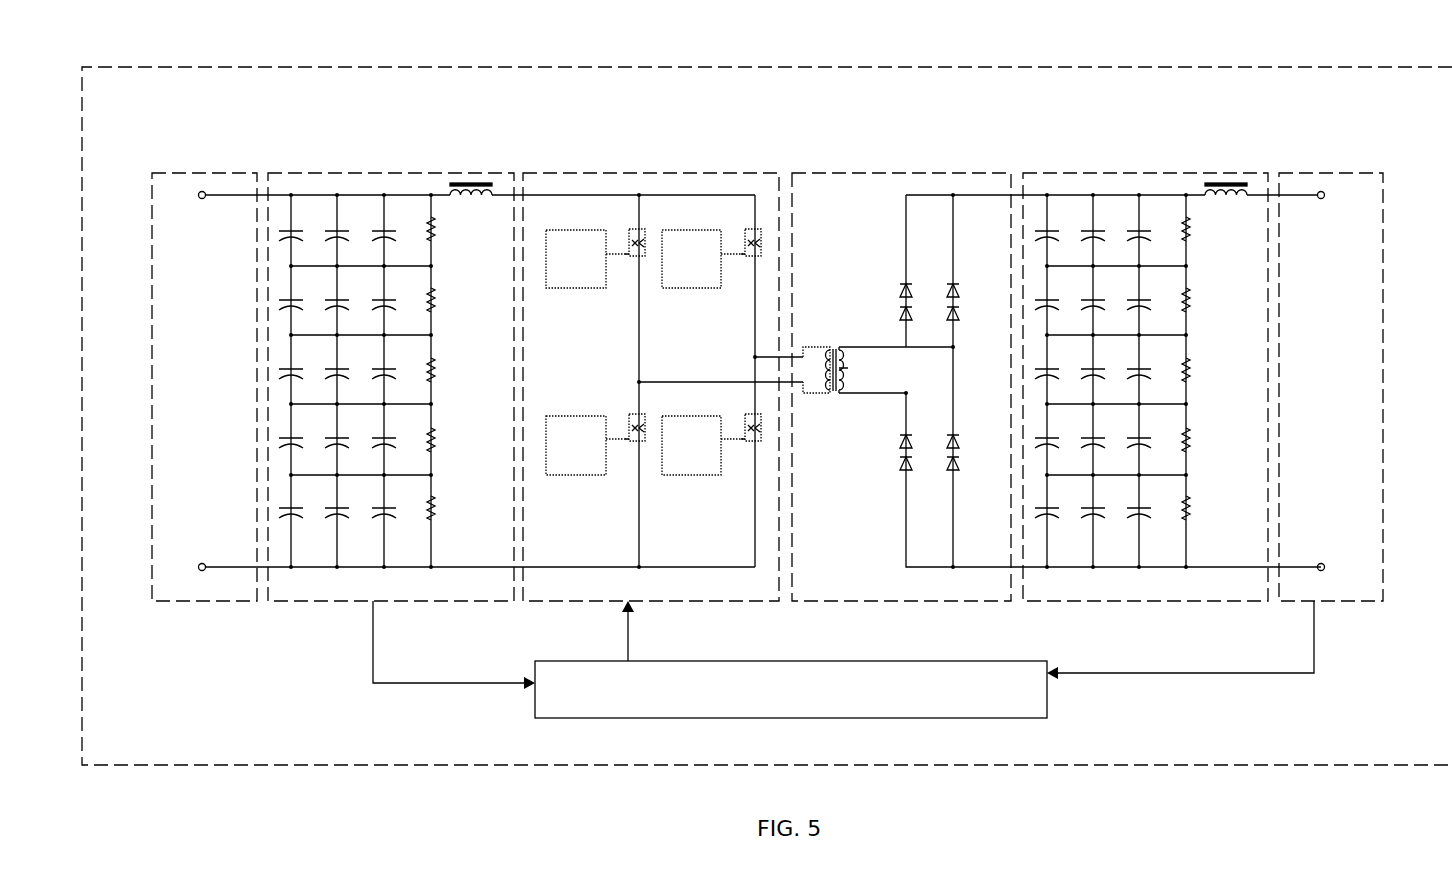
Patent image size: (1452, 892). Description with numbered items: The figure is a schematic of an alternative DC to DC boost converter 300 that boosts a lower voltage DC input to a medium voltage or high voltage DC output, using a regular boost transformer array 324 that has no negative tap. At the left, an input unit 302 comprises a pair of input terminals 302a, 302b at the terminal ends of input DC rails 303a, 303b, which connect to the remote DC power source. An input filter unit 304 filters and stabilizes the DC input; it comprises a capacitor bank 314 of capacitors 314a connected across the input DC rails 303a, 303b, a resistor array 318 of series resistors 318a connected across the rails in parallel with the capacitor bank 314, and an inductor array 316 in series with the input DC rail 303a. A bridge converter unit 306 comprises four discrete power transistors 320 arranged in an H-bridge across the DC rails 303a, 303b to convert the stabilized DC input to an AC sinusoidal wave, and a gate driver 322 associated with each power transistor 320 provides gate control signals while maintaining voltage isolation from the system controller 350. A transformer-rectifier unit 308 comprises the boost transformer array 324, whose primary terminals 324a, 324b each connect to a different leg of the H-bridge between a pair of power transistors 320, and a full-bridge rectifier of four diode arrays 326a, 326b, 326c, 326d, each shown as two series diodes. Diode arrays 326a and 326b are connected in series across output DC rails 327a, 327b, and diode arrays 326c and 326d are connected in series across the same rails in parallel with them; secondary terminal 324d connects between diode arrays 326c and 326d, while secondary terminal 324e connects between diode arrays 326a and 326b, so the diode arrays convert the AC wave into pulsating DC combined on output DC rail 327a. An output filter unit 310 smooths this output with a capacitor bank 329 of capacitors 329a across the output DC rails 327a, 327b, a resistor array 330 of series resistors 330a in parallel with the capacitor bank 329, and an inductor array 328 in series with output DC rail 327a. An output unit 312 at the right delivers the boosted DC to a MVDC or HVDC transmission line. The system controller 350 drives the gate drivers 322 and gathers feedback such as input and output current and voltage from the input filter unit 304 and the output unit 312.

The DC to DC boost converter 300 is at (482, 66).
The input unit 302 is at (205, 168).
The input terminal 302a is at (202, 200).
The input terminal 302b is at (203, 562).
The input filter unit 304 is at (322, 168).
The capacitor bank 314 is at (386, 194).
The capacitor 314a is at (280, 308).
The inductor array 316 is at (470, 183).
The resistor array 318 is at (453, 323).
The resistor 318a is at (437, 366).
The bridge converter unit 306 is at (636, 168).
The input DC rail 303a is at (551, 194).
The input DC rail 303b is at (553, 587).
The gate driver 322 is at (588, 285).
The power transistor 320 is at (633, 415).
The boost transformer array 324 is at (822, 346).
The primary side terminal 324a is at (754, 356).
The primary side terminal 324b is at (641, 381).
The secondary side terminal 324d is at (866, 343).
The secondary side terminal 324e is at (865, 398).
The transformer-rectifier unit 308 is at (820, 168).
The diode array 326a is at (901, 270).
The diode array 326b is at (897, 462).
The diode array 326c is at (945, 277).
The diode array 326d is at (957, 460).
The output filter unit 310 is at (1032, 168).
The capacitor bank 329 is at (1074, 588).
The capacitor 329a is at (1095, 227).
The output DC rail 327a is at (1139, 193).
The output DC rail 327b is at (1160, 587).
The inductor array 328 is at (1216, 183).
The resistor array 330 is at (1212, 417).
The resistor 330a is at (1190, 304).
The output unit 312 is at (1311, 168).
The system controller 350 is at (810, 660).